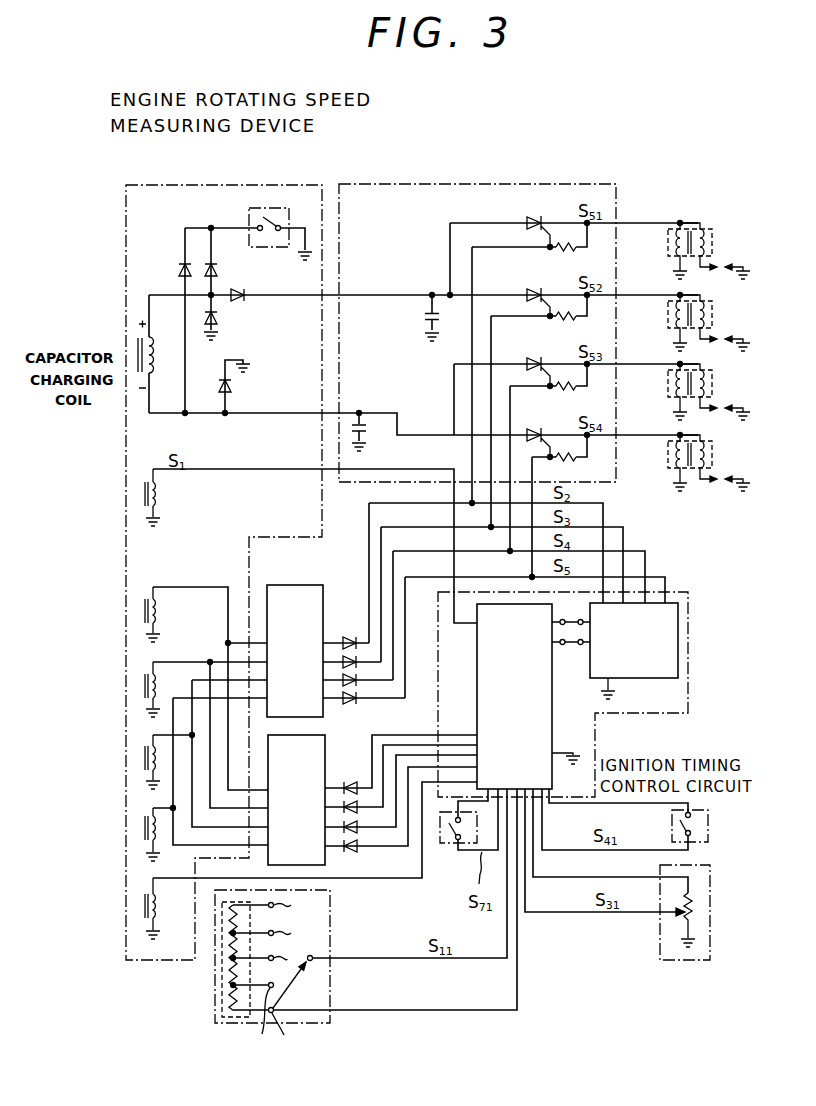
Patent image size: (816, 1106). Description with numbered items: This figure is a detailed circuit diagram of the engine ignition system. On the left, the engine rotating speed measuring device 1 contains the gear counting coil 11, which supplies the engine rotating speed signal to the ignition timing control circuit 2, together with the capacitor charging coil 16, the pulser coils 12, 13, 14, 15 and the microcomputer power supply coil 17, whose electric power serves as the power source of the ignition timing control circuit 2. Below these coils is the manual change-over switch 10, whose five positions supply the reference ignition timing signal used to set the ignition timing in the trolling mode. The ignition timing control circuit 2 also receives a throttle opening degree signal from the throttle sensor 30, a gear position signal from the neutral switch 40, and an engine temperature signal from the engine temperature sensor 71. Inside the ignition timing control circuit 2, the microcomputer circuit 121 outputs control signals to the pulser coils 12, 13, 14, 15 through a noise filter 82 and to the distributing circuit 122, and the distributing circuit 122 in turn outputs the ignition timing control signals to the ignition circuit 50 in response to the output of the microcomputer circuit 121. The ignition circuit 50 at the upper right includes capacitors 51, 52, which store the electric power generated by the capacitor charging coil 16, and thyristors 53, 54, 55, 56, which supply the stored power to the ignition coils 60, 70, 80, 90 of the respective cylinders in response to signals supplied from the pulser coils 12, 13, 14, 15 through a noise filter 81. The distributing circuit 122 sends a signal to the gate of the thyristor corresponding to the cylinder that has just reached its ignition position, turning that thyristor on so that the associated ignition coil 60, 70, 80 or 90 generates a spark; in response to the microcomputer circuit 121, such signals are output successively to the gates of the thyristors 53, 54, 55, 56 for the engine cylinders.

The engine rotating speed measuring device 1 is at (214, 184).
The ignition timing control circuit 2 is at (658, 716).
The manual change-over switch 10 is at (213, 996).
The gear counting coil 11 is at (143, 498).
The pulser coil 12 is at (143, 611).
The pulser coil 13 is at (143, 687).
The pulser coil 14 is at (143, 757).
The pulser coil 15 is at (143, 827).
The capacitor charging coil 16 is at (137, 345).
The microcomputer power supply coil 17 is at (143, 907).
The throttle sensor 30 is at (712, 890).
The neutral switch 40 is at (709, 816).
The ignition circuit 50 is at (550, 184).
The capacitor 51 is at (428, 316).
The capacitor 52 is at (366, 432).
The thyristor 53 is at (528, 217).
The thyristor 54 is at (530, 288).
The thyristor 55 is at (530, 357).
The thyristor 56 is at (535, 428).
The ignition coil 60 is at (669, 248).
The ignition coil 70 is at (669, 320).
The ignition coil 80 is at (669, 389).
The ignition coil 90 is at (669, 460).
The engine temperature sensor 71 is at (445, 844).
The noise filter 81 is at (311, 589).
The noise filter 82 is at (325, 753).
The microcomputer circuit 121 is at (552, 687).
The distributing circuit 122 is at (637, 679).